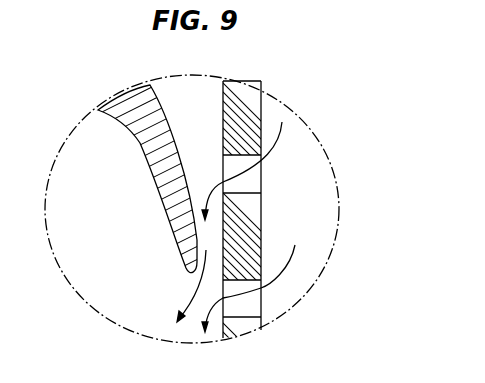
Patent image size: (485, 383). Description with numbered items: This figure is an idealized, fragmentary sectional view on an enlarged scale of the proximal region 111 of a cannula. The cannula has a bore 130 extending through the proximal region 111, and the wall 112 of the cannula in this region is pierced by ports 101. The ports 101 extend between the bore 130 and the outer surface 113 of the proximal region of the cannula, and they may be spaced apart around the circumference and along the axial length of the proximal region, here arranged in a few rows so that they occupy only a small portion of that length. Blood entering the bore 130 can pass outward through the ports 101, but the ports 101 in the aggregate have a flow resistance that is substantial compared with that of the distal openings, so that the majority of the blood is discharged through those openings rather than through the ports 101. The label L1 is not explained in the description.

The ports 101 is at (253, 177).
The proximal region 111 is at (223, 107).
The wall 112 is at (243, 93).
The outer surface 113 is at (223, 137).
The bore 130 is at (310, 205).
The blade L1 is at (165, 177).